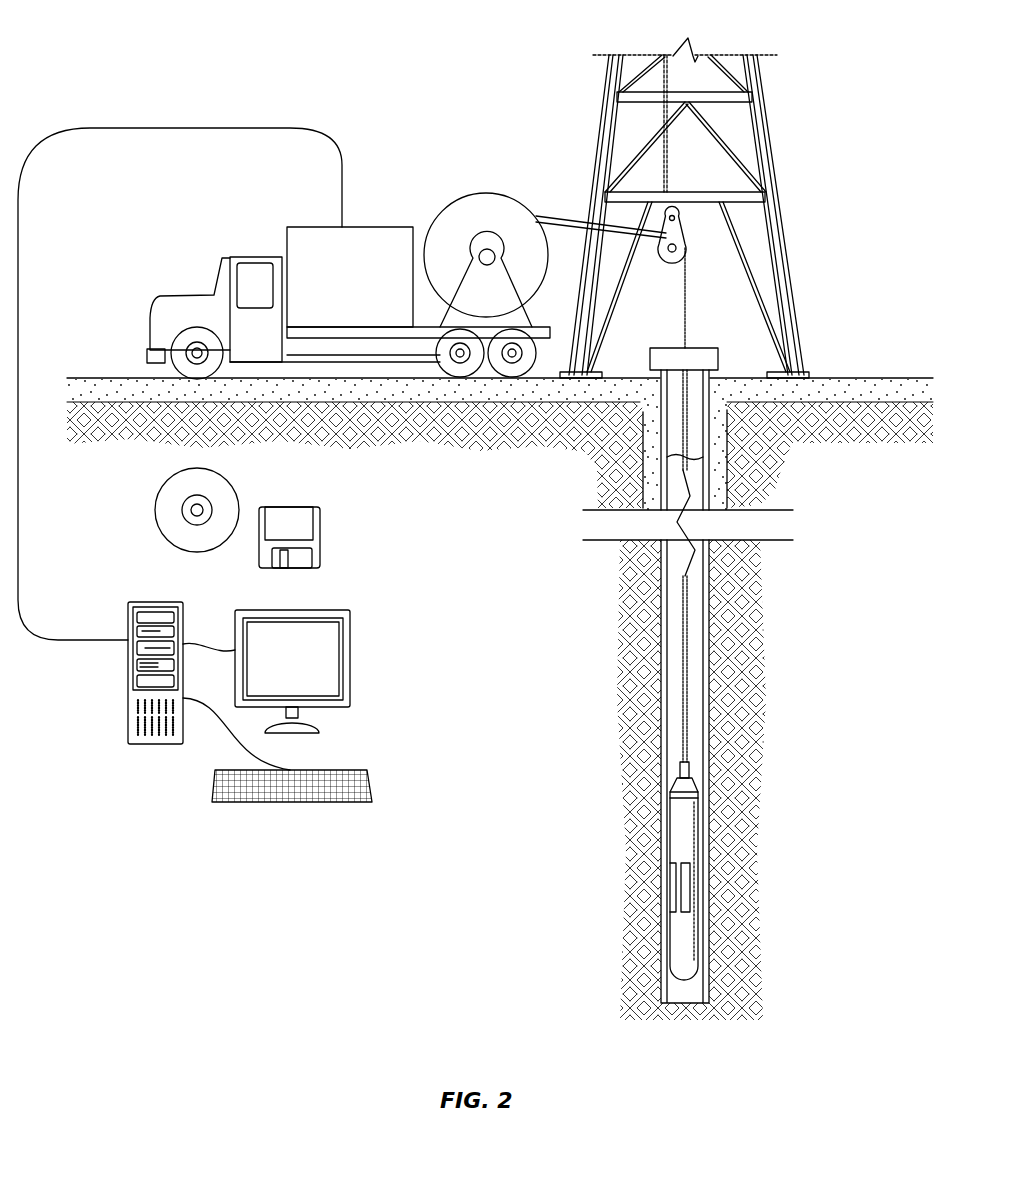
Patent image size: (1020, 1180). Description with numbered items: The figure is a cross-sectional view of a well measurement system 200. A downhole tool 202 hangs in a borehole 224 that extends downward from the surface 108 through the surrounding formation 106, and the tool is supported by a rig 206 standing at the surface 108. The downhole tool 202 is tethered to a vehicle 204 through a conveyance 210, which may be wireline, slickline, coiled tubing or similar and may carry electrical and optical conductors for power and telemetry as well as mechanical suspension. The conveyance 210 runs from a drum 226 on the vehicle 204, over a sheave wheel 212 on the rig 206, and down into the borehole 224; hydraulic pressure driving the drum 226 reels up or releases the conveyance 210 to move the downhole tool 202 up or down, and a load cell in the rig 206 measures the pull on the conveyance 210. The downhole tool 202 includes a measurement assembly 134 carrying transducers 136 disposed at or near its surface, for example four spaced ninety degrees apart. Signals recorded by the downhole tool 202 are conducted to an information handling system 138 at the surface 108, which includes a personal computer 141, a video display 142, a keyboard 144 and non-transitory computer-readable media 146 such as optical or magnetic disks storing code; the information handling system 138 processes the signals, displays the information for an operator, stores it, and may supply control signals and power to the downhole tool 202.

The well measurement system 200 is at (150, 50).
The vehicle 204 is at (362, 226).
The drum 226 is at (487, 193).
The rig 206 is at (780, 212).
The sheave wheel 212 is at (672, 264).
The surface 108 is at (845, 378).
The borehole 224 is at (782, 490).
The formation 106 is at (882, 618).
The conveyance 210 is at (683, 628).
The downhole tool 202 is at (650, 842).
The transducers 136 is at (672, 898).
The measurement assembly 134 is at (652, 980).
The non-transitory computer-readable media 146 is at (290, 507).
The personal computer 141 is at (155, 602).
The video display 142 is at (295, 610).
The keyboard 144 is at (372, 783).
The information handling system 138 is at (148, 830).